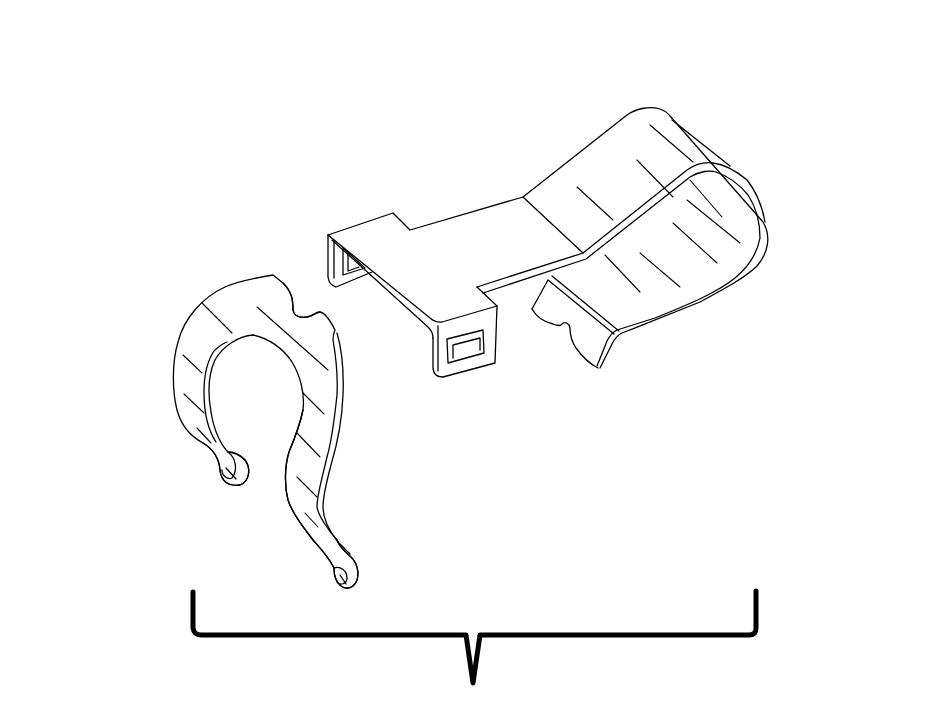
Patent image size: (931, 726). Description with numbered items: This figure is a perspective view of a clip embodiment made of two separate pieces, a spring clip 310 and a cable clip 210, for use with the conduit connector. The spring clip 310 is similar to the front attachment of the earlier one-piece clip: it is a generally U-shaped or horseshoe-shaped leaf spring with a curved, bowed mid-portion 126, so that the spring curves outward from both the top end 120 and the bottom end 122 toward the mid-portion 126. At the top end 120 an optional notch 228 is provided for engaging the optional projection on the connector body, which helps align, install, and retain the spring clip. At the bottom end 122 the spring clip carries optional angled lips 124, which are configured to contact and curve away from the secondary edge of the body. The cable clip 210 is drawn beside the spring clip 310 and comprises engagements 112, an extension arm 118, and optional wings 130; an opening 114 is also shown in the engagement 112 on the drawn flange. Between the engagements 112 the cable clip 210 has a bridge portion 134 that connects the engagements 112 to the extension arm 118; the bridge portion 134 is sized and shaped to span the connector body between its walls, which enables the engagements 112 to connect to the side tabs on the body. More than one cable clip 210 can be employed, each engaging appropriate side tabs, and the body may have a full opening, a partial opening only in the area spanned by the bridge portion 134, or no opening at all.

The spring clip 310 is at (128, 264).
The top end 120 is at (240, 300).
The bottom end 122 is at (370, 545).
The angled lip 124 is at (230, 485).
The mid-portion 126 is at (203, 347).
The notch 228 is at (298, 300).
The cable clip 210 is at (516, 132).
The bridge portion 134 is at (450, 273).
The engagement 112 is at (485, 368).
The window 114 is at (457, 350).
The extension arm 118 is at (662, 292).
The wing 130 is at (574, 352).